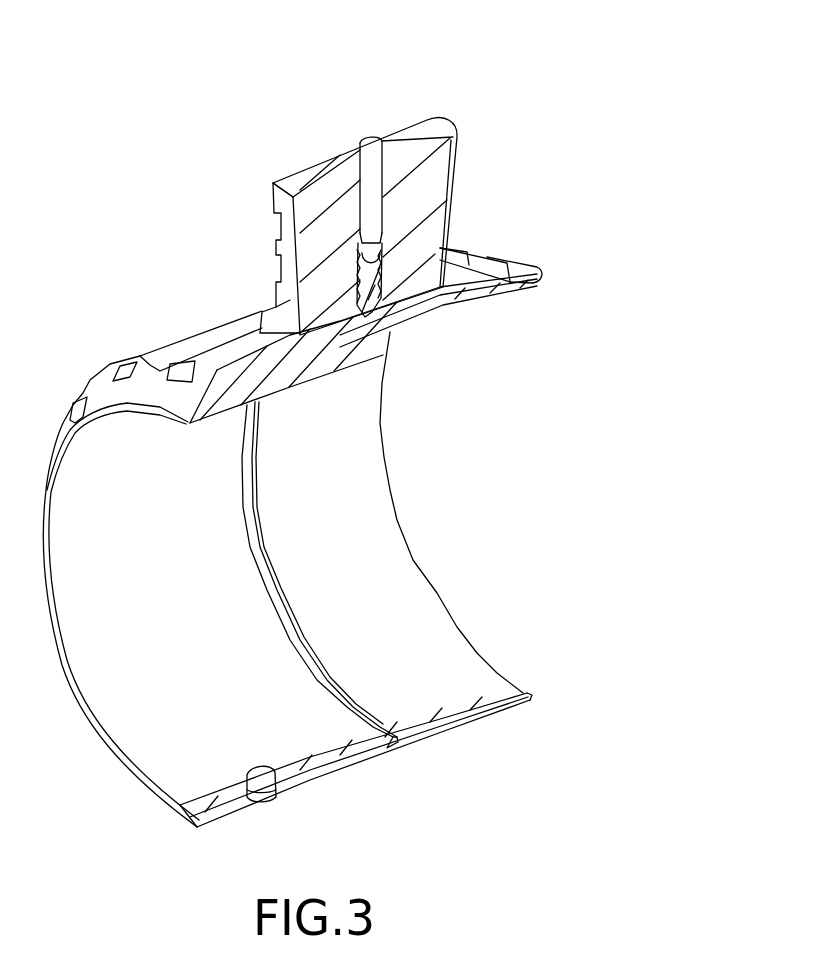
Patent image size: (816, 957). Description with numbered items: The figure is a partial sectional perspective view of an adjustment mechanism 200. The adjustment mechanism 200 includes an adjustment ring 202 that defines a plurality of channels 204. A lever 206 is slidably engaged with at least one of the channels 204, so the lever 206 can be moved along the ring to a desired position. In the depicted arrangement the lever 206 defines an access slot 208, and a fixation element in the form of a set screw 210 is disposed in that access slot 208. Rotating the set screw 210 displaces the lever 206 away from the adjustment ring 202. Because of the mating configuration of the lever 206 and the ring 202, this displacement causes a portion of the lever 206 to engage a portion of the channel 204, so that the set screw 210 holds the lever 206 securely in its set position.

The adjustment mechanism 200 is at (603, 138).
The adjustment ring 202 is at (495, 684).
The channels 204 is at (177, 337).
The lever 206 is at (430, 127).
The access slot 208 is at (372, 120).
The set screw 210 is at (360, 290).